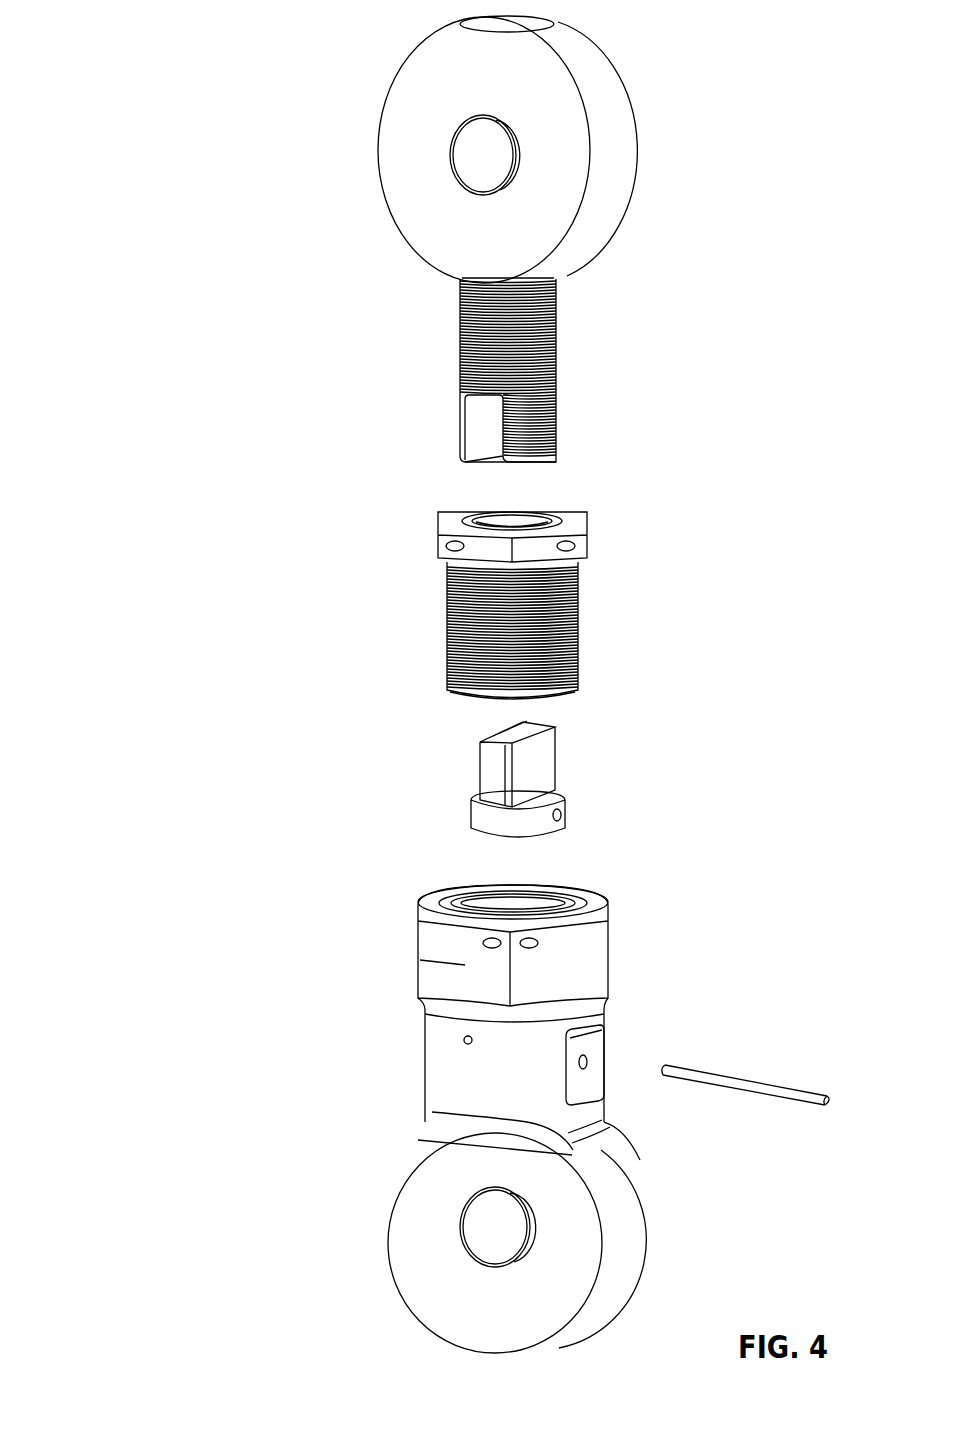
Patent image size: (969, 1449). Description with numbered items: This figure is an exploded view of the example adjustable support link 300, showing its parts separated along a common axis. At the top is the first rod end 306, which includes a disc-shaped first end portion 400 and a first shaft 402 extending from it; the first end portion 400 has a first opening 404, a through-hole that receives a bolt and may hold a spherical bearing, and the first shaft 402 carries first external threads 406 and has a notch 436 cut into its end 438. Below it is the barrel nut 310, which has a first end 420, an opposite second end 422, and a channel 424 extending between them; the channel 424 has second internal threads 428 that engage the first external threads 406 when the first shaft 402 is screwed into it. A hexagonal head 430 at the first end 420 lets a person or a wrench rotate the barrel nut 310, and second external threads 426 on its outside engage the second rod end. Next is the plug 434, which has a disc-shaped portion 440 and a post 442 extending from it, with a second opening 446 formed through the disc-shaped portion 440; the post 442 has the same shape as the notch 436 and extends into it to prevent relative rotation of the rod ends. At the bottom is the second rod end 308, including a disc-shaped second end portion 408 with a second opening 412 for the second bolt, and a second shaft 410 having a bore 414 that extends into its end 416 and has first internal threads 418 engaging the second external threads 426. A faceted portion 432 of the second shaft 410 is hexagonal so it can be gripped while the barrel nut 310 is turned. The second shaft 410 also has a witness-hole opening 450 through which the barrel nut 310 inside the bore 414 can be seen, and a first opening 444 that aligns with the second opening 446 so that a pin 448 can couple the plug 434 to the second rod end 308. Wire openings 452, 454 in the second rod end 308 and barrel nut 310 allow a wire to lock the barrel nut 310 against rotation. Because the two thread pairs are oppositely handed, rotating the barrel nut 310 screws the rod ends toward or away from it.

The adjustable support link 300 is at (136, 42).
The first end portion 400 is at (418, 124).
The first opening 404 is at (443, 160).
The first rod end 306 is at (462, 237).
The first shaft 402 is at (462, 344).
The first external threads 406 is at (465, 374).
The notch 436 is at (478, 425).
The end of the first shaft 438 is at (532, 462).
The first end 420 is at (452, 520).
The channel 424 is at (505, 514).
The second internal threads 428 is at (560, 518).
The head 430 is at (440, 545).
The wire openings 454 is at (582, 545).
The barrel nut 310 is at (455, 596).
The second external threads 426 is at (457, 646).
The second end 422 is at (486, 700).
The plug 434 is at (495, 782).
The post 442 is at (495, 752).
The disc-shaped portion 440 is at (488, 817).
The second opening 446 is at (567, 815).
The end of the second shaft 416 is at (438, 905).
The bore 414 is at (500, 888).
The first internal threads 418 is at (530, 900).
The wire openings 452 is at (539, 947).
The faceted portion 432 is at (465, 965).
The second shaft 410 is at (460, 1077).
The opening 450 is at (460, 1040).
The first opening 444 is at (594, 1063).
The pin 448 is at (792, 1086).
The second rod end 308 is at (440, 1130).
The second end portion 408 is at (437, 1270).
The second opening 412 is at (460, 1228).